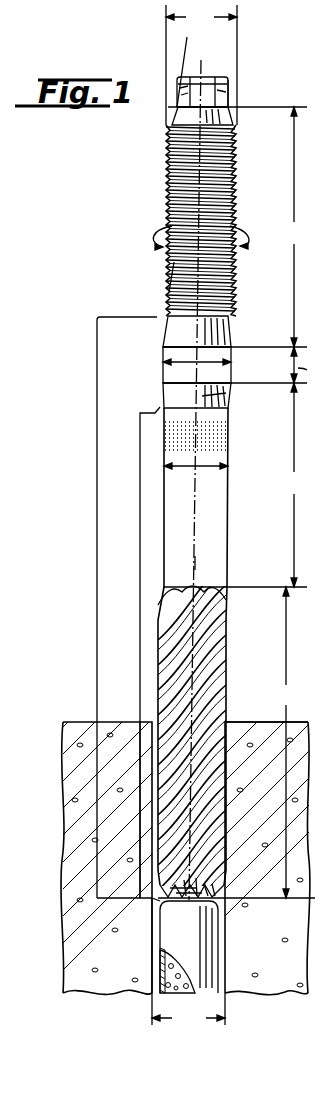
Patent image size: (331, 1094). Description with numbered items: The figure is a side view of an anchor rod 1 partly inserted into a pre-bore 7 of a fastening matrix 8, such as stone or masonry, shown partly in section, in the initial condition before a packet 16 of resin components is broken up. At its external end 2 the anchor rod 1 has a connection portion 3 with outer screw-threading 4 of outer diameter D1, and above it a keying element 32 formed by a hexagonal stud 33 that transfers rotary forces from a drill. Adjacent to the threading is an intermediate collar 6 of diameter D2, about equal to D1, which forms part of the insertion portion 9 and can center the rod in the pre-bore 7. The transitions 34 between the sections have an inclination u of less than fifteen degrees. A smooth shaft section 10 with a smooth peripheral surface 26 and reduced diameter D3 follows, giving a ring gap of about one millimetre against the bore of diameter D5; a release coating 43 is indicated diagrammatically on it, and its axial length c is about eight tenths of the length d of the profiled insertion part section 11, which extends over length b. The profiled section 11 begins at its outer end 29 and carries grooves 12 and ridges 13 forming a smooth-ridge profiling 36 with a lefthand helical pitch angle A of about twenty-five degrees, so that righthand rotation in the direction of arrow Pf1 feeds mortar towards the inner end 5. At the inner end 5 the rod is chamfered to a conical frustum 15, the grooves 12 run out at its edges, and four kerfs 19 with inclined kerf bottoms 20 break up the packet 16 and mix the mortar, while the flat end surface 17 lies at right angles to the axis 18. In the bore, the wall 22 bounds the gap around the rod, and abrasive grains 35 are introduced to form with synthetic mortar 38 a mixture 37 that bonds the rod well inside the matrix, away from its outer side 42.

The anchor rod 1 is at (246, 172).
The external end 2 is at (220, 76).
The connection portion 3 is at (241, 205).
The outer screw-threading 4 is at (181, 186).
The inner end 5 is at (152, 906).
The intermediate collar 6 is at (232, 362).
The pre-bore 7 is at (156, 962).
The fastening matrix 8 is at (78, 722).
The insertion portion 9 is at (97, 586).
The smooth shaft section 10 is at (140, 492).
The profiled insertion part section 11 is at (140, 742).
The grooves 12 is at (222, 606).
The ridges 13 is at (180, 809).
The conical frustum 15 is at (215, 891).
The packet 16 is at (206, 957).
The end surface 17 is at (177, 959).
The axis 18 is at (205, 214).
The kerfs 19 is at (198, 900).
The kerf bottom 20 is at (206, 882).
The wall 22 is at (228, 758).
The peripheral surface 26 is at (230, 523).
The outer end 29 is at (208, 585).
The keying element 32 is at (232, 97).
The hexagonal stud 33 is at (232, 82).
The transitions 34 is at (224, 113).
The abrasive grains 35 is at (160, 986).
The smooth-ridge profiling 36 is at (200, 646).
The mixture 37 is at (162, 991).
The synthetic mortar 38 is at (162, 949).
The outer side 42 is at (250, 722).
The release coating 43 is at (230, 437).
The outer diameter of the external end threading D1 is at (201, 65).
The diameter of the intermediate collar D2 is at (186, 366).
The diameter of the smooth shaft section D3 is at (205, 467).
The diameter of the pre-bore D5 is at (188, 1010).
The thread length a is at (235, 227).
The axial length of the profiled entrainment section b is at (241, 365).
The axial length of the smooth shaft section c is at (235, 485).
The axial length of the profiled entrainment section d is at (268, 742).
The inclination u is at (192, 44).
The arrow Pf1 is at (250, 245).
The helical pitch angle A is at (196, 563).